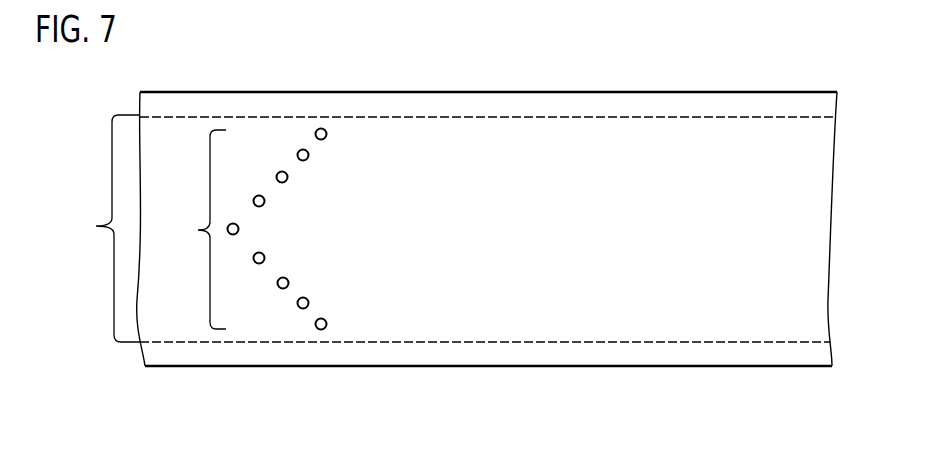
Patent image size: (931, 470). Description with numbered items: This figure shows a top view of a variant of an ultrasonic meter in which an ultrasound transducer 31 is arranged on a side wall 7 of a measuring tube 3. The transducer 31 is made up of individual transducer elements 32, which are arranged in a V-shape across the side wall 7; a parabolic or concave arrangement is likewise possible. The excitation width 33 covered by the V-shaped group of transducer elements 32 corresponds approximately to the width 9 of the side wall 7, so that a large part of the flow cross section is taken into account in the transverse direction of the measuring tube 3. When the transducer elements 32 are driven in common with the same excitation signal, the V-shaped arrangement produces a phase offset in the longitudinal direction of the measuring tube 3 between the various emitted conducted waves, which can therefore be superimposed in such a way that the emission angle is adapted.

The measuring tube 3 is at (696, 81).
The side wall 7 is at (448, 314).
The width 9 is at (107, 228).
The ultrasound transducer 31 is at (315, 158).
The transducer elements 32 is at (286, 184).
The excitation width 33 is at (247, 229).